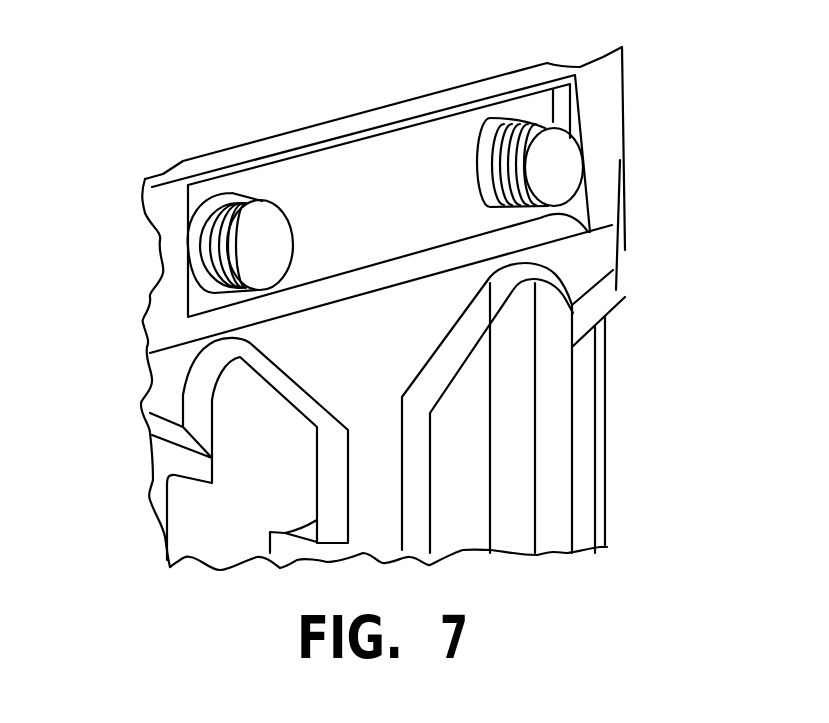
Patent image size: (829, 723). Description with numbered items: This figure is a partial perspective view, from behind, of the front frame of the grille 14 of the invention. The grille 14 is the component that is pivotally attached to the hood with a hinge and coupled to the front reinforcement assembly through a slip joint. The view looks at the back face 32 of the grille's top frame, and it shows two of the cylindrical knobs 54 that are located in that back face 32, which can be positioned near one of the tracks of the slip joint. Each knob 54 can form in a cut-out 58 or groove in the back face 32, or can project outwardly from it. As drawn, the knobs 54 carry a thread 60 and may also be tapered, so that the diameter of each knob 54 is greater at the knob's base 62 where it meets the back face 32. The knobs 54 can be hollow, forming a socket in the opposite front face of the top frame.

The grille 14 is at (588, 271).
The back face 32 is at (448, 167).
The cut-out 58 is at (315, 185).
The cylindrical knob 54 is at (567, 162).
The knob base 62 is at (535, 118).
The thread 60 is at (217, 260).